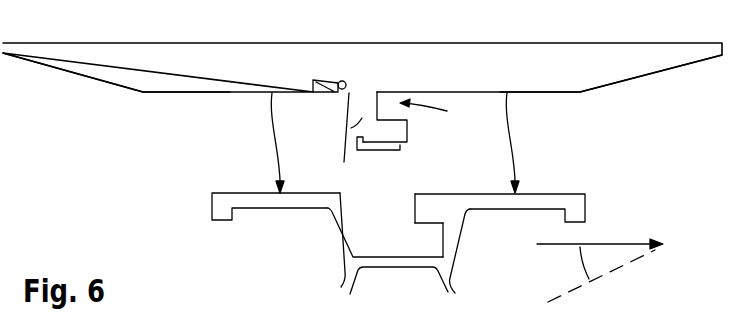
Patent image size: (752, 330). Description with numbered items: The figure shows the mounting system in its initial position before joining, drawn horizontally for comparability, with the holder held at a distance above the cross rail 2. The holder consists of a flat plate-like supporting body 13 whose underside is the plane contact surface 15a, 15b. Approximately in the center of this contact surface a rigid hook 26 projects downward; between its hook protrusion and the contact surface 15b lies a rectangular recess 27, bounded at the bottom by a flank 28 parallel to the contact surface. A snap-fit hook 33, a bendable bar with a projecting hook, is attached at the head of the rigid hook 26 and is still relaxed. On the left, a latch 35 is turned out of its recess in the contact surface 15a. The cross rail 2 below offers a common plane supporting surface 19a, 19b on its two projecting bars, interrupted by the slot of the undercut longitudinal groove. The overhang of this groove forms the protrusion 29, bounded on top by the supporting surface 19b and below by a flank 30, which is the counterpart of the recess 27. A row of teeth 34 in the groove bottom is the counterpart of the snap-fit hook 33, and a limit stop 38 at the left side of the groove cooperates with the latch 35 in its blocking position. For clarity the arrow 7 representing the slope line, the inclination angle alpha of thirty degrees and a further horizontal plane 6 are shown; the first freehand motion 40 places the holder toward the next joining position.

The supporting body 13 is at (472, 58).
The contact surface 15a is at (196, 100).
The contact surface 15b is at (554, 96).
The first freehand motion 40 is at (271, 138).
The supporting surface 19a is at (235, 186).
The supporting surface 19b is at (565, 192).
The latch 35 is at (333, 95).
The rigid hook 26 is at (338, 139).
The limit stop 38 is at (342, 195).
The recess 27 is at (439, 117).
The flank 28 is at (392, 115).
The snap-fit hook 33 is at (397, 151).
The protrusion 29 is at (416, 206).
The flank 30 is at (432, 224).
The row of teeth 34 is at (436, 249).
The cross rail 2 is at (405, 226).
The arrow 7 is at (615, 242).
The horizontal plane 6 is at (616, 268).
The inclination angle alpha is at (592, 263).